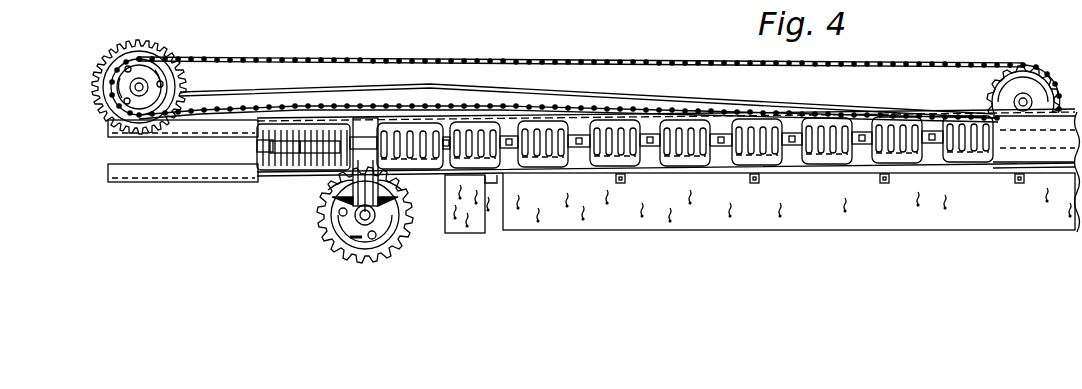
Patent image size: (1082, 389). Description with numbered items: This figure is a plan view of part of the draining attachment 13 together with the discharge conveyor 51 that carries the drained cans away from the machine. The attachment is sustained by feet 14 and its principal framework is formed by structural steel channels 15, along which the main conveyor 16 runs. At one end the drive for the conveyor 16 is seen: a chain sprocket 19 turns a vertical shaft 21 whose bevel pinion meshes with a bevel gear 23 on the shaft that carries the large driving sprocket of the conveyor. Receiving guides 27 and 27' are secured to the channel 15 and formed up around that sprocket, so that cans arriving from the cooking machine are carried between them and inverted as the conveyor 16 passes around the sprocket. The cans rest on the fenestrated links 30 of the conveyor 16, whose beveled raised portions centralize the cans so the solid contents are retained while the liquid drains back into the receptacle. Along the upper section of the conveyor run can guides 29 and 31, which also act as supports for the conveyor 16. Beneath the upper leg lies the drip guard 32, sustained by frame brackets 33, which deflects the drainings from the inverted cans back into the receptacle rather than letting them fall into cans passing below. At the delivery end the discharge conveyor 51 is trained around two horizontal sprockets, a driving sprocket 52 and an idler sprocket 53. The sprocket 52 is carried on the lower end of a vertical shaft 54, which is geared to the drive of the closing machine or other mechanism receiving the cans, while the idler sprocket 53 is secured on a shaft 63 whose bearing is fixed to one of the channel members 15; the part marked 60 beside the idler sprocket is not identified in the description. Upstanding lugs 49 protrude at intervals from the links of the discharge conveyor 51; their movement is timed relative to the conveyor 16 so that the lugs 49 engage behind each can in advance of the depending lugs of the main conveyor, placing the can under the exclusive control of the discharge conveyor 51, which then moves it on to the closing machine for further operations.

The draining attachment 13 is at (1045, 272).
The feet 14 is at (632, 275).
The structural steel channels 15 is at (387, 280).
The conveyor 16 is at (161, 210).
The chain sprocket 19 is at (337, 257).
The vertical shaft 21 is at (352, 215).
The bevel gear 23 is at (393, 207).
The receiving guide 27 is at (186, 187).
The receiving guide 27' is at (183, 140).
The can guide 29 is at (934, 164).
The links 30 is at (904, 117).
The can guide 31 is at (866, 118).
The drip guard 32 is at (703, 216).
The frame brackets 33 is at (887, 182).
The upstanding lugs 49 is at (323, 58).
The discharge conveyor 51 is at (502, 58).
The driving sprocket 52 is at (104, 53).
The vertical shaft 54 is at (108, 96).
The idler sprocket 53 is at (1013, 78).
The sprocket hub disc 60 is at (999, 101).
The shaft 63 is at (1031, 90).